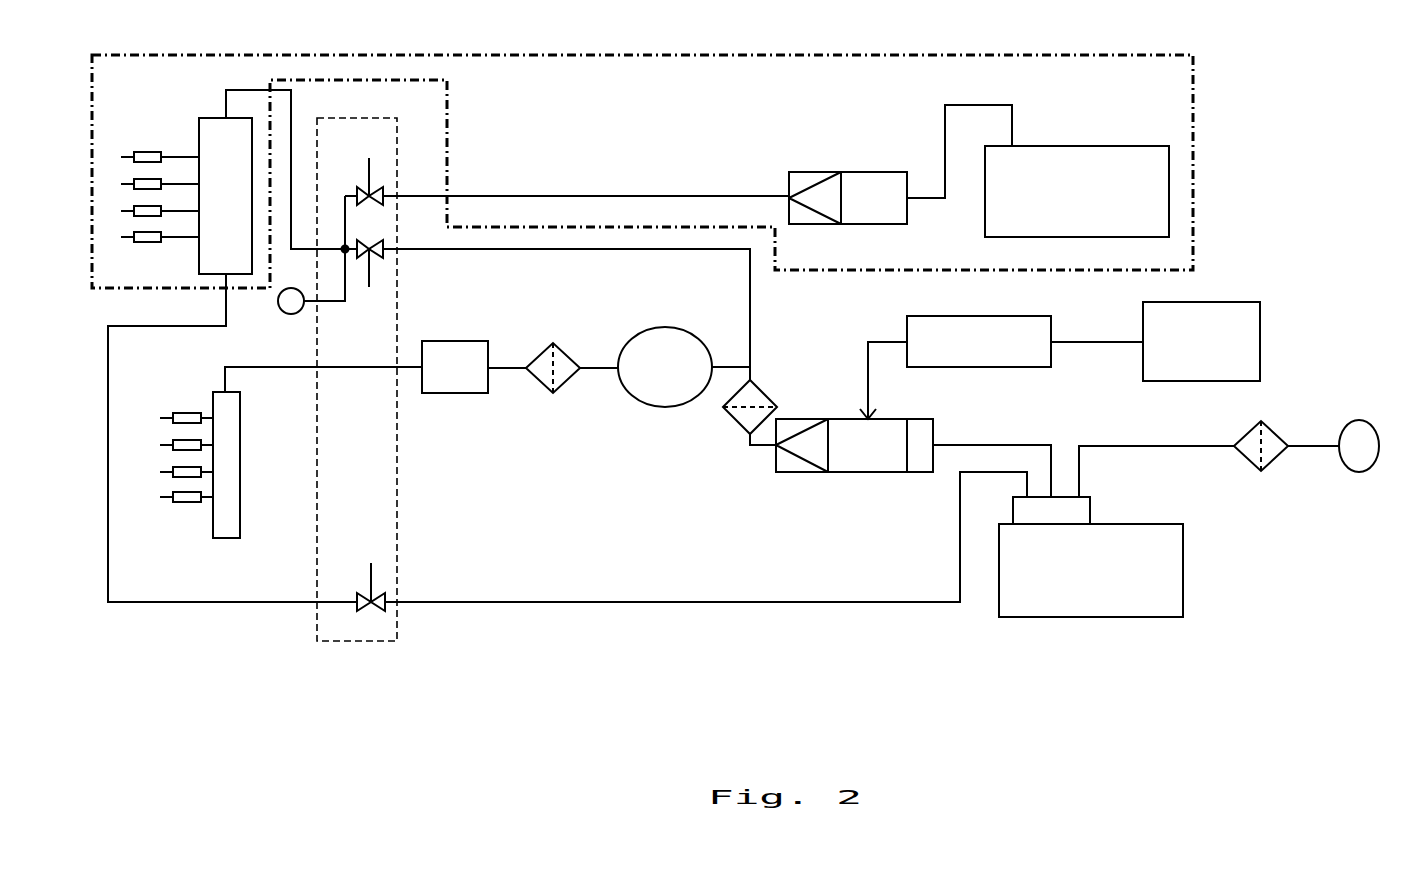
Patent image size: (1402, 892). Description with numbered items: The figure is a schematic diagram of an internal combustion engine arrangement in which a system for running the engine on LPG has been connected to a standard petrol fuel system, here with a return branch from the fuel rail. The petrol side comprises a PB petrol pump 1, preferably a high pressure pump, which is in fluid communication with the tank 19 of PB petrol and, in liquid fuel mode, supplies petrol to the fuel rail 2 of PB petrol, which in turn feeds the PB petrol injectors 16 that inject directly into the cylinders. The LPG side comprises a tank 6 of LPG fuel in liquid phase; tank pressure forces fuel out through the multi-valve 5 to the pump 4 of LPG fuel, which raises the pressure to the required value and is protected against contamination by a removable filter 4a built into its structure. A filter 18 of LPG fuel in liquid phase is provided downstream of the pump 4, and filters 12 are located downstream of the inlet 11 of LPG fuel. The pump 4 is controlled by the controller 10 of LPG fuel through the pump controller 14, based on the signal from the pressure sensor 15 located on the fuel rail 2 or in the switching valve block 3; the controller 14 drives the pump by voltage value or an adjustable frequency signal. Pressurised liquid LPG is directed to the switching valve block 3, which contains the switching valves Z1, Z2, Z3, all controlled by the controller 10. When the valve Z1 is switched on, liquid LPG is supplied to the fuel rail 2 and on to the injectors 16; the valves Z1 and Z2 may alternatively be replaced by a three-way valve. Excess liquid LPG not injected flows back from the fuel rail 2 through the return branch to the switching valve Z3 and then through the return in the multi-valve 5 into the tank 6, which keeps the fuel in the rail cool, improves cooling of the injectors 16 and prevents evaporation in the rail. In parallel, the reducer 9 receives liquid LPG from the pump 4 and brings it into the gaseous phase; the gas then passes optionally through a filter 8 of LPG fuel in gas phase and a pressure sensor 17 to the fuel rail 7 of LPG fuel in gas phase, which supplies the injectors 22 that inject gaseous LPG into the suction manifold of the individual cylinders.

The PB petrol pump 1 is at (848, 198).
The fuel rail of PB petrol 2 is at (225, 196).
The switching valve block 3 is at (357, 366).
The pump of LPG fuel in liquid phase 4 is at (854, 445).
The filter of LPG fuel 4a is at (919, 445).
The multi-valve 5 is at (1051, 510).
The tank of LPG fuel 6 is at (1091, 570).
The fuel rail of LPG fuel in gas phase 7 is at (226, 465).
The filter of LPG fuel in gas phase 8 is at (552, 355).
The reducer of LPG fuel 9 is at (665, 367).
The controller of LPG fuel 10 is at (1201, 341).
The inlet of LPG fuel 11 is at (1346, 440).
The filter of LPG fuel 12 is at (1248, 440).
The pump controller 14 is at (979, 341).
The pressure sensor 15 is at (285, 315).
The PB petrol injector 16 is at (160, 177).
The pressure sensor of LPG fuel in gas phase 17 is at (455, 367).
The filter of LPG fuel in liquid phase 18 is at (755, 397).
The tank of PB petrol 19 is at (1077, 191).
The injectors of LPG fuel in gas phase 22 is at (184, 470).
The switching valve Z1 is at (363, 277).
The switching valve Z2 is at (370, 170).
The switching valve Z3 is at (371, 576).